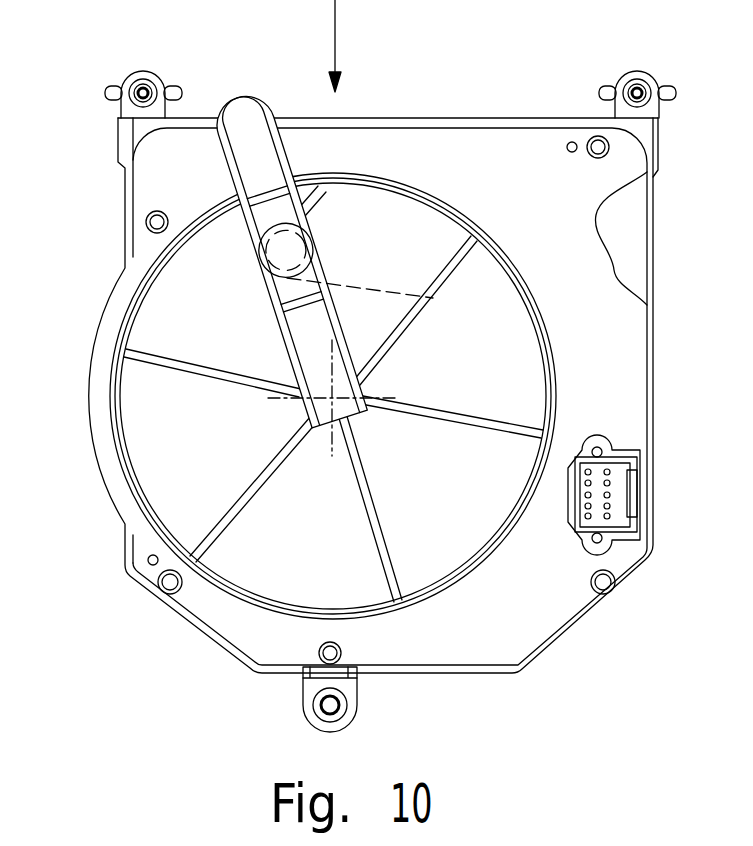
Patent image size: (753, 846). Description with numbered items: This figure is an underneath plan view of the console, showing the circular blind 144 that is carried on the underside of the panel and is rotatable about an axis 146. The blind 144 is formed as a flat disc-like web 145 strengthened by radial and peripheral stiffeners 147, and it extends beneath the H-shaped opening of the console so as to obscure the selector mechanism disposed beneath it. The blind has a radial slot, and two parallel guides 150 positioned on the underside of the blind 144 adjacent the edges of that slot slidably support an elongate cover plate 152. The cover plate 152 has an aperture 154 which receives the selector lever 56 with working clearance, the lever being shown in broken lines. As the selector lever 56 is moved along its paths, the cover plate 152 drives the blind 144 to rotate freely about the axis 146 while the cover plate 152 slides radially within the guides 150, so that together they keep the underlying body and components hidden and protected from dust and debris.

The selector lever 56 is at (380, 299).
The circular blind 144 is at (178, 497).
The flat disc-like web 145 is at (475, 506).
The axis 146 is at (352, 400).
The radial and peripheral stiffeners 147 is at (276, 470).
The parallel guides 150 is at (258, 303).
The elongate cover plate 152 is at (240, 117).
The aperture 154 is at (297, 216).